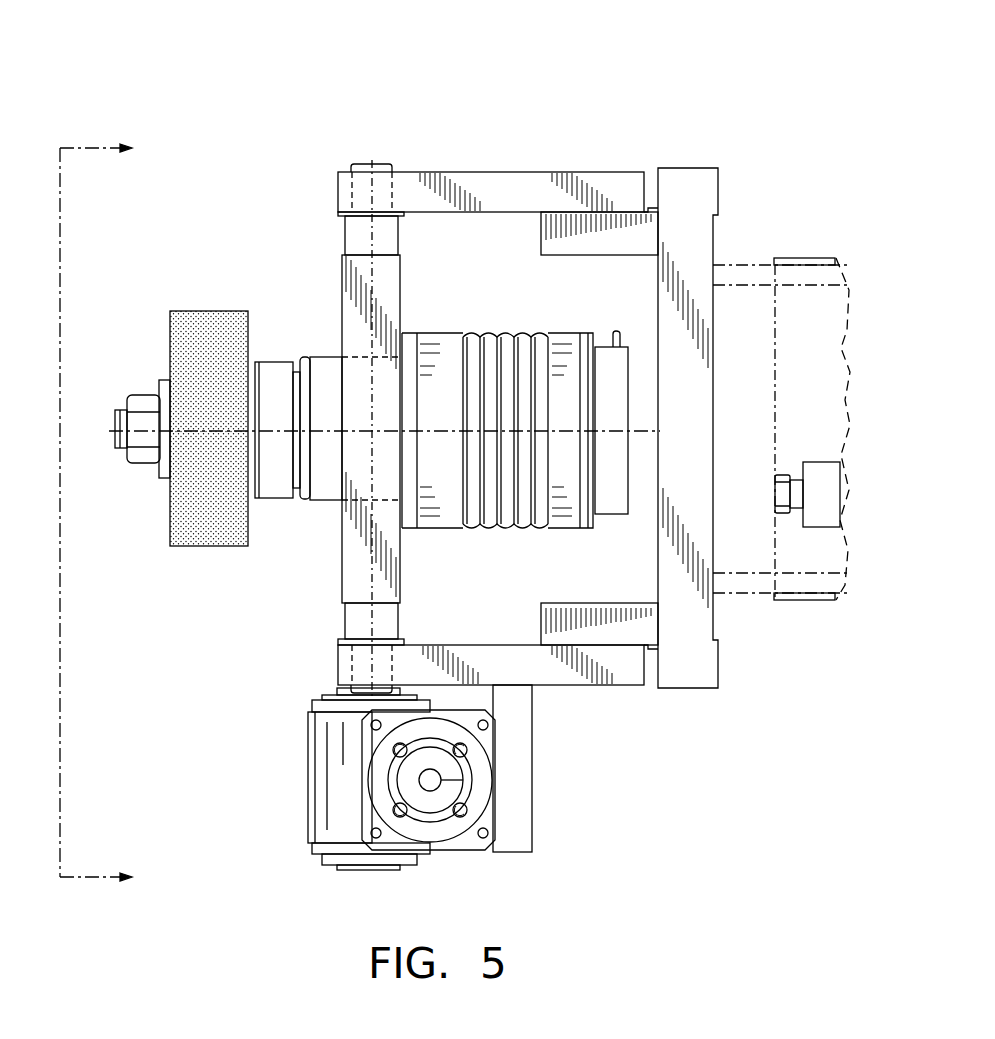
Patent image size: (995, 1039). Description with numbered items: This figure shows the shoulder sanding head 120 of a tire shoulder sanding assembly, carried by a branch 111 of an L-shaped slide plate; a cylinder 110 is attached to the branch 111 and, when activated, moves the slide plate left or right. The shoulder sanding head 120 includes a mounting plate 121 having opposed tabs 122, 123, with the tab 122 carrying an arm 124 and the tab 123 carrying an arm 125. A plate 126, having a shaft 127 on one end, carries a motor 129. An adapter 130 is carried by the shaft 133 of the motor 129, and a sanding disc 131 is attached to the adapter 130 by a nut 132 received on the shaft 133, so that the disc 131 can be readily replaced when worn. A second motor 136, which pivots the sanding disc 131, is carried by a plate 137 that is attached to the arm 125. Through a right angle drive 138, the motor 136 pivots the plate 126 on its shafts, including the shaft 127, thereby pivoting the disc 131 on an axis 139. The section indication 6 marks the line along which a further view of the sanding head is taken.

The section line 6- 6 is at (106, 513).
The shoulder sanding head 120 is at (253, 106).
The mounting plate 121 is at (683, 183).
The tab 122 is at (595, 236).
The tab 123 is at (595, 622).
The arm 124 is at (502, 192).
The arm 125 is at (498, 657).
The plate 126 is at (363, 553).
The shaft 127 is at (348, 189).
The motor 129 is at (438, 370).
The adapter 130 is at (268, 398).
The sanding disc 131 is at (202, 493).
The nut 132 is at (148, 458).
The shaft 133 is at (118, 412).
The motor 136 is at (380, 775).
The plate 137 is at (518, 779).
The right angle drive 138 is at (308, 752).
The axis 139 is at (368, 236).
The cylinder 110 is at (823, 507).
The branch 111 is at (760, 348).